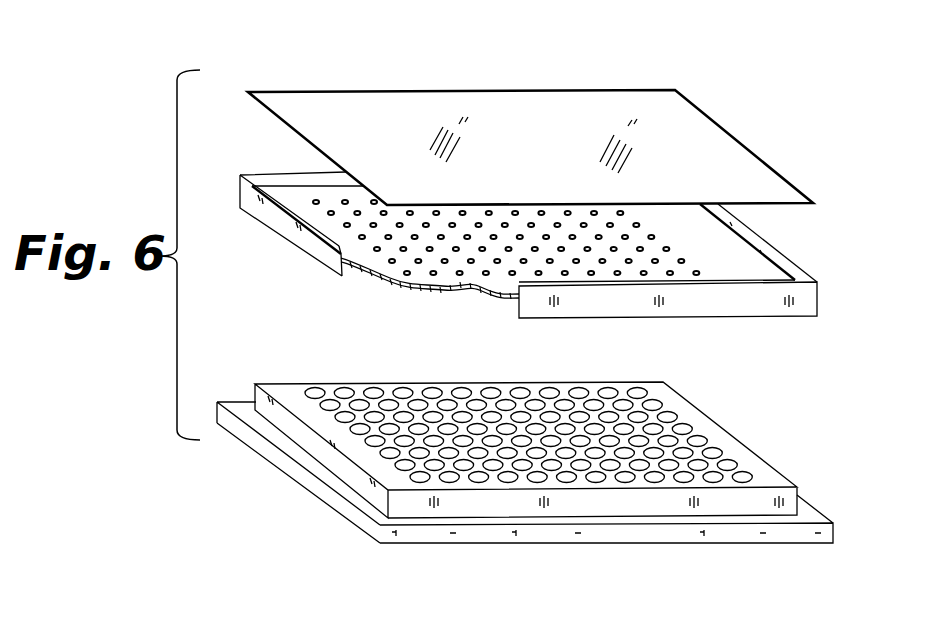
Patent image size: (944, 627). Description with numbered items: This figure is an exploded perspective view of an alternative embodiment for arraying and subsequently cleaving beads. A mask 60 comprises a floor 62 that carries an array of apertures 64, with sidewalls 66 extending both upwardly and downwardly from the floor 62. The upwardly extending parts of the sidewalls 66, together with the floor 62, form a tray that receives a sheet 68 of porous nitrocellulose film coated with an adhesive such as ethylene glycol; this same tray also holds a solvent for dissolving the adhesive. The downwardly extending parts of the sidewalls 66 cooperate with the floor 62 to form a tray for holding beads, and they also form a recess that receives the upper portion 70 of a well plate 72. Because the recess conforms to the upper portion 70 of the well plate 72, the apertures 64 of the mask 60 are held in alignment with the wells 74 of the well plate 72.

The mask 60 is at (552, 206).
The floor 62 is at (482, 291).
The apertures 64 is at (434, 277).
The sidewalls 66 is at (333, 250).
The sheet 68 is at (297, 102).
The upper portion 70 is at (347, 476).
The well plate 72 is at (348, 540).
The wells 74 is at (342, 420).